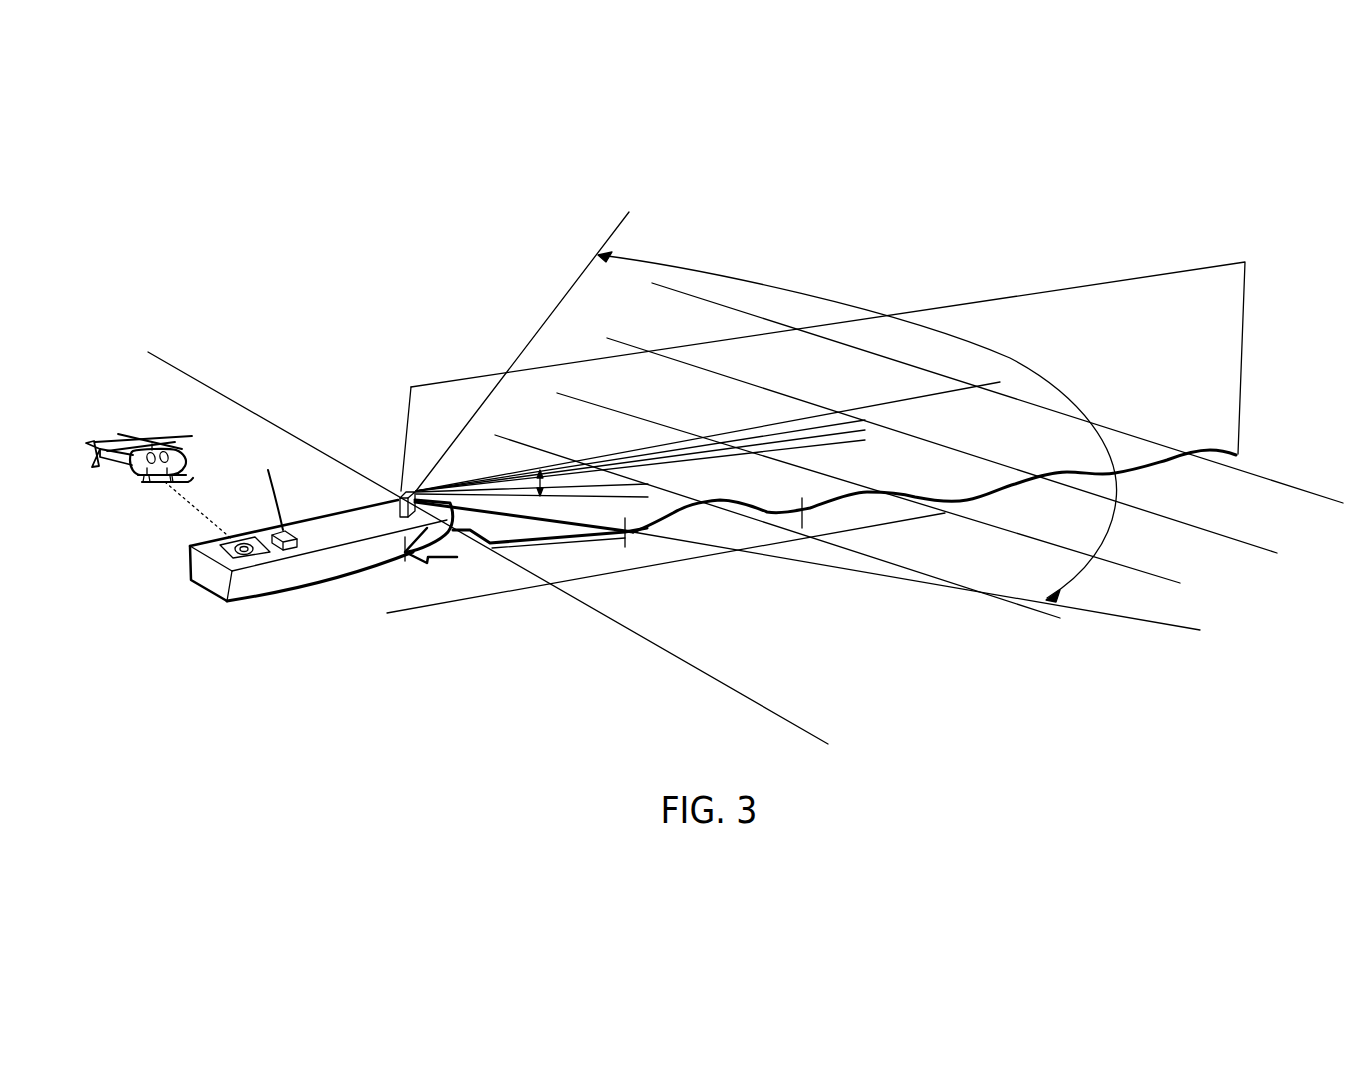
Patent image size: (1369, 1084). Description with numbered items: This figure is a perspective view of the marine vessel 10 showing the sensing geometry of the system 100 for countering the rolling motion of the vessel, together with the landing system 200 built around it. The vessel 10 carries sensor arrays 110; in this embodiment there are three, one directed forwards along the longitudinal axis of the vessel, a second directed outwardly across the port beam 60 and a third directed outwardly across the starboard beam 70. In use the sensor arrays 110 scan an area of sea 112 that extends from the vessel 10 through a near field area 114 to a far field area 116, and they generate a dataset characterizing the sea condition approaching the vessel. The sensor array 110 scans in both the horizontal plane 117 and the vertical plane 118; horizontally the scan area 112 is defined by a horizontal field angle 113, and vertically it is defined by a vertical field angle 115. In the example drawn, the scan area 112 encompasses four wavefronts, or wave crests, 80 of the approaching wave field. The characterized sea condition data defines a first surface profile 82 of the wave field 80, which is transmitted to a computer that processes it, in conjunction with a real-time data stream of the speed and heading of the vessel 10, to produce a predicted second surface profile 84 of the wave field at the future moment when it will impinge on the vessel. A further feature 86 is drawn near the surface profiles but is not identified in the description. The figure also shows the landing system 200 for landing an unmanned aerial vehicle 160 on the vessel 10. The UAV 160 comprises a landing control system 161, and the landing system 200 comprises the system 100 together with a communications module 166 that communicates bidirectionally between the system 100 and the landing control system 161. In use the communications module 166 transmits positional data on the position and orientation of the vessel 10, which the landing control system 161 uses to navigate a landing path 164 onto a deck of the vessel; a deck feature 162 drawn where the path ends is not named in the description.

The marine vessel 10 is at (318, 521).
The port beam 60 is at (334, 517).
The starboard beam 70 is at (336, 556).
The wavefronts 80 is at (710, 512).
The first surface profile 82 is at (745, 498).
The predicted second surface profile 84 is at (455, 533).
The tow cable 86 is at (479, 547).
The system for countering the rolling motion of a marine vessel 100 is at (350, 365).
The sensor array 110 is at (396, 490).
The scan area 112 is at (855, 574).
The horizontal field angle 113 is at (1070, 587).
The near field area 114 is at (639, 535).
The vertical field angle 115 is at (541, 474).
The far field area 116 is at (972, 437).
The horizontal plane 117 is at (611, 620).
The vertical plane 118 is at (1177, 269).
The unmanned aerial vehicle 160 is at (112, 458).
The landing control system 161 is at (153, 482).
The landing pad 162 is at (255, 557).
The landing path 164 is at (191, 510).
The communications module 166 is at (272, 470).
The landing system 200 is at (137, 454).